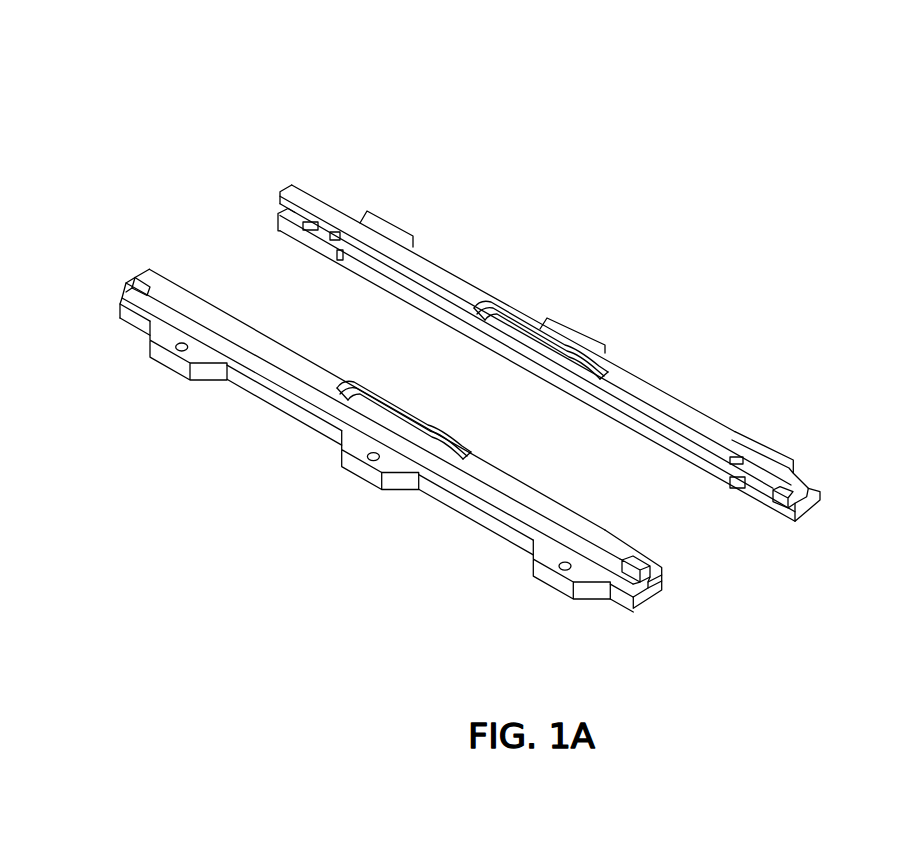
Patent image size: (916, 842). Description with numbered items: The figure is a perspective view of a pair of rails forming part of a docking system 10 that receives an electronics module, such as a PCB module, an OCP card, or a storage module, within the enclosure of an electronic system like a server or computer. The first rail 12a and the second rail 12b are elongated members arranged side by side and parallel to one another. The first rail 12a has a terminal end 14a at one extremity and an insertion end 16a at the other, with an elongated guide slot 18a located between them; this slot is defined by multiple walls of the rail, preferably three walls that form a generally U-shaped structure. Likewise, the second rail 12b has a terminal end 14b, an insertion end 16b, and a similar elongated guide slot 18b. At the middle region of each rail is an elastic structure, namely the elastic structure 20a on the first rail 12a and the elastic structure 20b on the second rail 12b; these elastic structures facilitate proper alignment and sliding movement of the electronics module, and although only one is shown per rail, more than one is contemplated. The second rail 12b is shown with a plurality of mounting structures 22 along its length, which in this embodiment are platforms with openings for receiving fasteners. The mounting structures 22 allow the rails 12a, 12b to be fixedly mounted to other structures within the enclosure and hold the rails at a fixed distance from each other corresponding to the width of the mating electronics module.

The docking system 10 is at (196, 113).
The first rail 12a is at (426, 260).
The second rail 12b is at (305, 366).
The terminal end 14a is at (292, 183).
The terminal end 14b is at (147, 268).
The insertion end 16a is at (823, 505).
The insertion end 16b is at (647, 609).
The elongated guide slot 18a is at (764, 507).
The elongated guide slot 18b is at (673, 583).
The elastic structure 20a is at (532, 322).
The elastic structure 20b is at (405, 412).
The mounting structures 22 is at (147, 338).